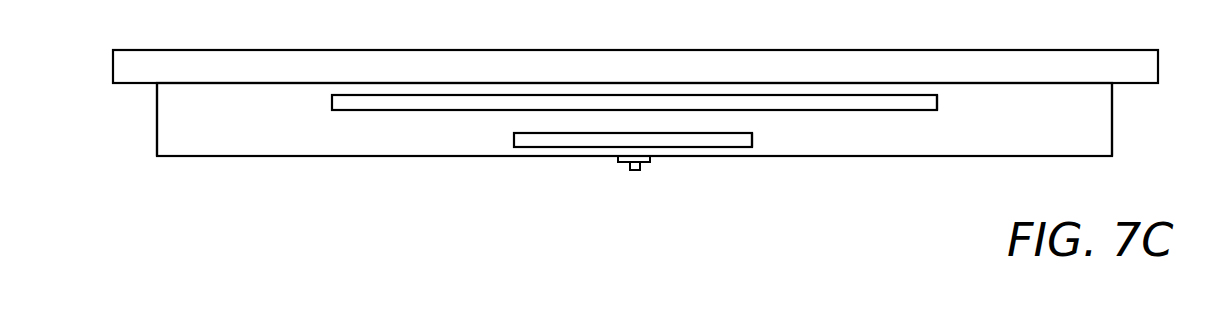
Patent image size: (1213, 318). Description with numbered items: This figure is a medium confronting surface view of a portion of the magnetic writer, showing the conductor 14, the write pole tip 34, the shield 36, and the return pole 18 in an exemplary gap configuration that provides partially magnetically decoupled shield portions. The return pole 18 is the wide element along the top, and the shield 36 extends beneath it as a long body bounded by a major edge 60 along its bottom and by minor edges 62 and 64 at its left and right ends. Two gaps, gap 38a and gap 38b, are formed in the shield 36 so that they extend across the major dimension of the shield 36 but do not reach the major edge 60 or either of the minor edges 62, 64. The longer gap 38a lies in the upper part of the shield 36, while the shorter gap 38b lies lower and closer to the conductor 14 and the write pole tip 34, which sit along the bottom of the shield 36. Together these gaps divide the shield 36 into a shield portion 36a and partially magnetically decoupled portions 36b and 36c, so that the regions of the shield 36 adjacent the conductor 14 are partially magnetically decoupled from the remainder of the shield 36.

The return pole 18 is at (133, 78).
The minor edge 62 is at (156, 126).
The major edge 60 is at (195, 157).
The minor edge 64 is at (1112, 120).
The shield 36 is at (360, 165).
The shield portion 36a is at (943, 92).
The partially magnetically decoupled portion 36b is at (748, 126).
The partially magnetically decoupled portion 36c is at (563, 149).
The gap 38a is at (852, 103).
The gap 38b is at (517, 140).
The conductor 14 is at (650, 162).
The write pole tip 34 is at (634, 170).